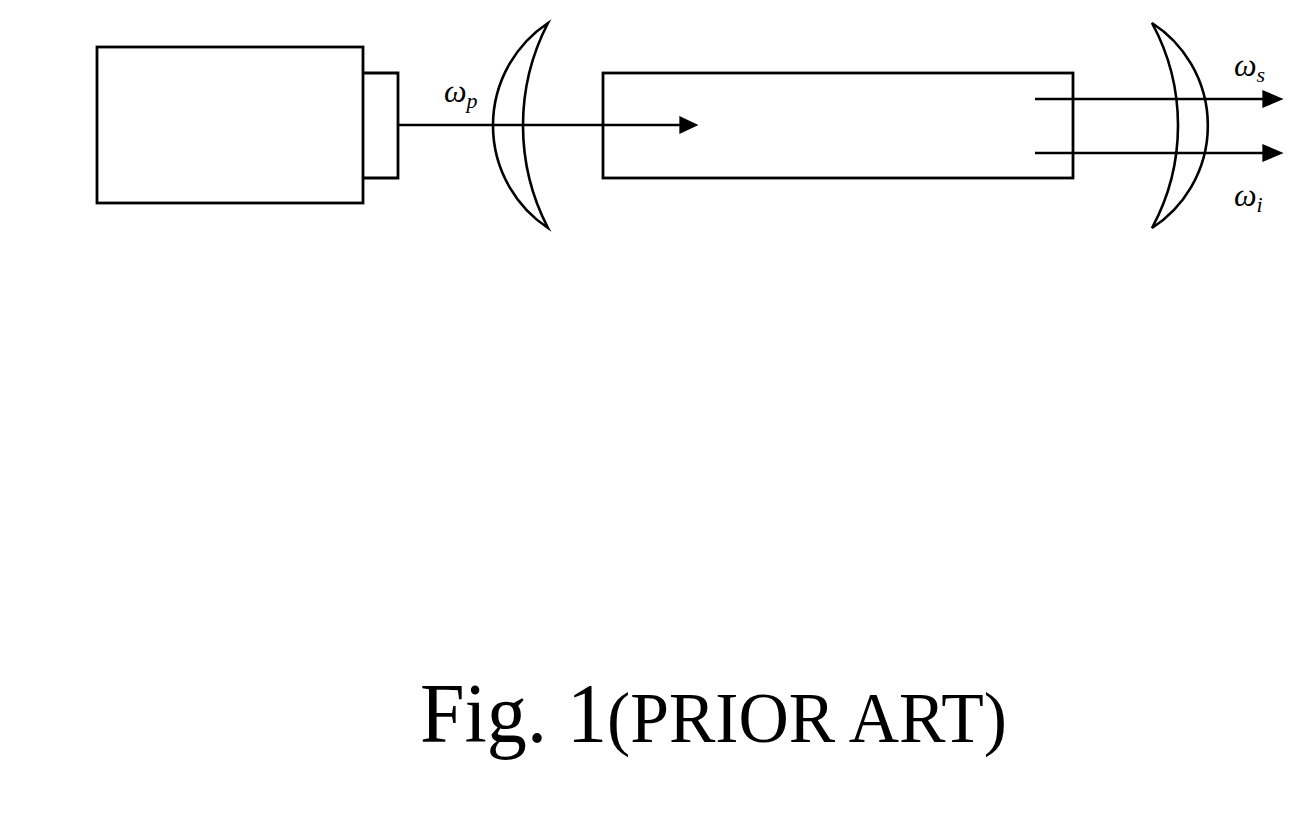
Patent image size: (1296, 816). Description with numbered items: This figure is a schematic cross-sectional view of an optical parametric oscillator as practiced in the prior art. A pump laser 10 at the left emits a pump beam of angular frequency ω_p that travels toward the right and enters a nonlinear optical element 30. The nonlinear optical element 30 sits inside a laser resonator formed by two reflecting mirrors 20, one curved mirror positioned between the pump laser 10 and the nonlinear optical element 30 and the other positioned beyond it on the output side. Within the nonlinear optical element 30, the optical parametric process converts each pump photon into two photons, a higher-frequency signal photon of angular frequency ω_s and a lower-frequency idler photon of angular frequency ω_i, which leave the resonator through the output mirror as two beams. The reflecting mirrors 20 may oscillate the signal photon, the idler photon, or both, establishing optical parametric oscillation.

The pump laser 10 is at (294, 165).
The reflecting mirrors 20 is at (522, 243).
The nonlinear optical element 30 is at (1073, 203).